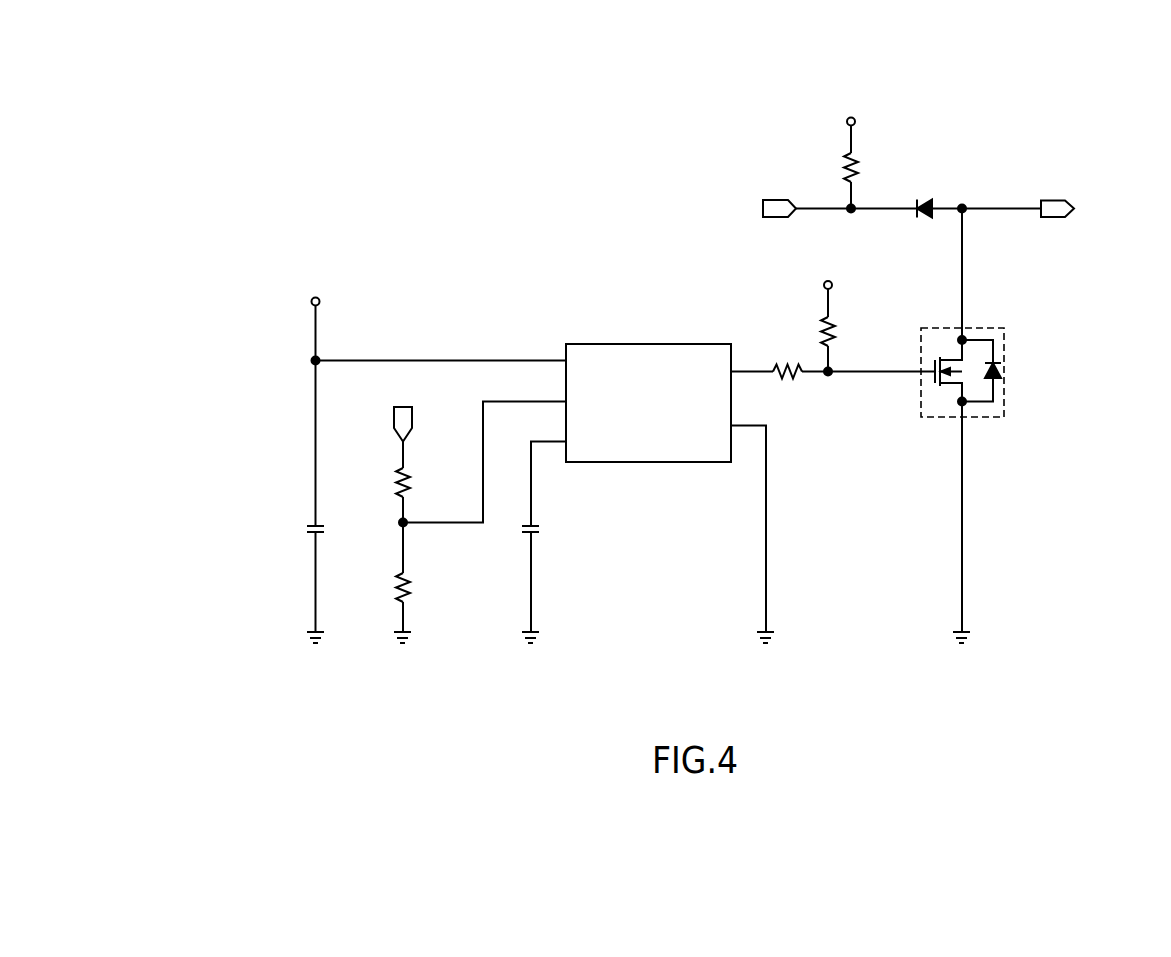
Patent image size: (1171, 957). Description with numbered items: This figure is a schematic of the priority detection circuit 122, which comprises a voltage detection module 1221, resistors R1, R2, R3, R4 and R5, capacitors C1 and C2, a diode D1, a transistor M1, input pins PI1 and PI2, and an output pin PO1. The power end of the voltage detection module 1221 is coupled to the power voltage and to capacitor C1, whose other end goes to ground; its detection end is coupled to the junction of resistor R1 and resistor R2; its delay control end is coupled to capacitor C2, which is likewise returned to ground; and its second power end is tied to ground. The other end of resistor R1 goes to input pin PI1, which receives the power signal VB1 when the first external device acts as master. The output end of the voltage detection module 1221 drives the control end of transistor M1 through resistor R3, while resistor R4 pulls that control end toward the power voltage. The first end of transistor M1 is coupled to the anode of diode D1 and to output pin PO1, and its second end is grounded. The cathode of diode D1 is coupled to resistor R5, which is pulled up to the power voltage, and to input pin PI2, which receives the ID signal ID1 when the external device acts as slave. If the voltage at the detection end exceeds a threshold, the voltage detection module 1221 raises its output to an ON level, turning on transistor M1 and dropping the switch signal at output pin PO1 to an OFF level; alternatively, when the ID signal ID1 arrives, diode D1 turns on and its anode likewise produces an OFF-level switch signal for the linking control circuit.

The priority detection circuit 122 is at (205, 130).
The voltage detection module 1221 is at (641, 344).
The input pin PI1 is at (407, 421).
The input pin PI2 is at (777, 207).
The output pin PO1 is at (1054, 210).
The transistor M1 is at (988, 327).
The resistor R1 is at (417, 482).
The resistor R2 is at (417, 587).
The resistor R3 is at (787, 360).
The resistor R4 is at (844, 331).
The resistor R5 is at (866, 167).
The capacitor C1 is at (329, 576).
The capacitor C2 is at (545, 537).
The diode D1 is at (924, 199).
The power signal VB1 is at (403, 413).
The ID signal ID1 is at (779, 208).